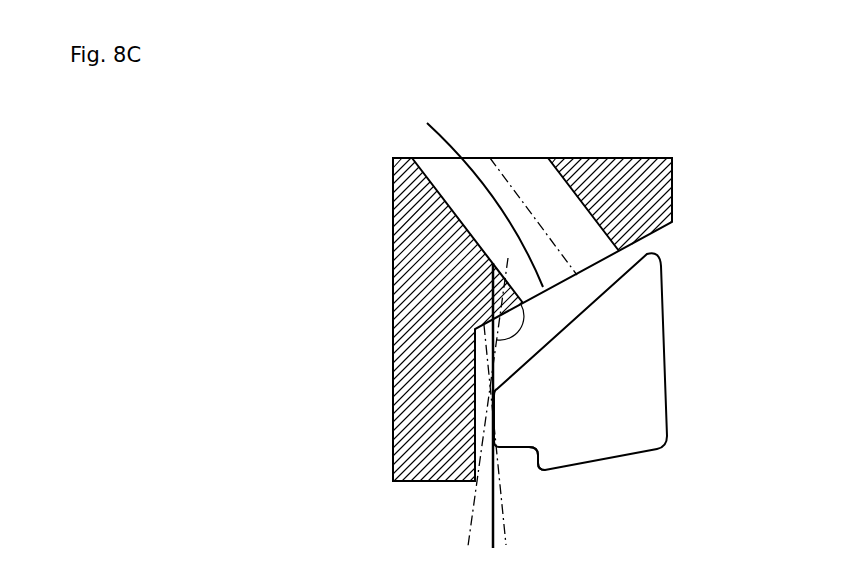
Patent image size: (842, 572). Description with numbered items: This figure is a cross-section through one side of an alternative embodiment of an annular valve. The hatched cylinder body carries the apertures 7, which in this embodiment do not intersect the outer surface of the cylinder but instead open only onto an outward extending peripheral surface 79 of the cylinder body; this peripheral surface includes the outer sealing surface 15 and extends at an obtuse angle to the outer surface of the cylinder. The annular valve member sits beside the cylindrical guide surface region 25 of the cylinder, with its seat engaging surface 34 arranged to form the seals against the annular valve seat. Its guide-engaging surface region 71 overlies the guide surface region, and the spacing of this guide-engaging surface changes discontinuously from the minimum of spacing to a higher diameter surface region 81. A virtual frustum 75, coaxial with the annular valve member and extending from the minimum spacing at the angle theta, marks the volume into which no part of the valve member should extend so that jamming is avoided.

The aperture 7 is at (521, 170).
The outer sealing surface 15 is at (627, 245).
The guide surface region 25 is at (477, 377).
The seat engaging surface 34 is at (527, 357).
The guide-engaging surface region 71 is at (478, 483).
The virtual frustum 75 is at (507, 537).
The outward extending peripheral surface 79 is at (466, 195).
The higher diameter surface region 81 is at (537, 467).